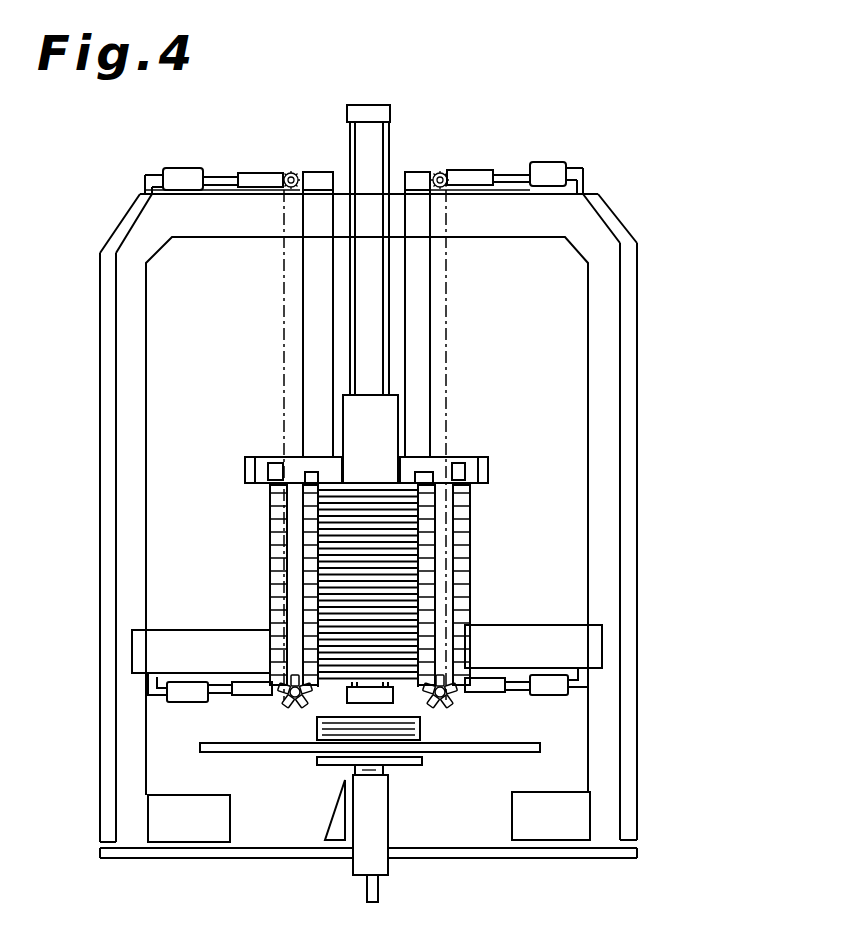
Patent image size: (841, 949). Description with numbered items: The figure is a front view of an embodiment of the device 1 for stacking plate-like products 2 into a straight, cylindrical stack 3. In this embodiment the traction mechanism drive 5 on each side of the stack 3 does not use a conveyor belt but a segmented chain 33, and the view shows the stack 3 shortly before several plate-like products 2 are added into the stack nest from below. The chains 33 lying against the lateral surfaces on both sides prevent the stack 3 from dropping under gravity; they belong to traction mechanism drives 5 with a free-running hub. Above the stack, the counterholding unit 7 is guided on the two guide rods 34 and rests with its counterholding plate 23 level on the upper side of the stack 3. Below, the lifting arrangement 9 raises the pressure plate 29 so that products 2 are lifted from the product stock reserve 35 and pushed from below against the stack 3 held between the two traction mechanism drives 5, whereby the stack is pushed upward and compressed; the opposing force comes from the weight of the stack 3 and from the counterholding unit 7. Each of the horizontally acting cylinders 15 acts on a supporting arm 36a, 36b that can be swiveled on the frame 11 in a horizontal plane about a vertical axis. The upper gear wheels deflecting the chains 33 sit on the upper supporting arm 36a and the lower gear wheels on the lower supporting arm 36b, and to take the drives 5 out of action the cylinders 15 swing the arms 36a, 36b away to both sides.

The device 1 is at (640, 168).
The plate-like products 2 is at (402, 728).
The stack 3 is at (383, 537).
The traction mechanism drive 5 is at (292, 390).
The counterholding unit 7 is at (408, 434).
The lifting arrangement 9 is at (398, 810).
The frame 11 is at (610, 395).
The horizontally acting cylinders 15 is at (182, 172).
The counterholding plate 23 is at (253, 467).
The pressure plate 29 is at (407, 760).
The segmented chain 33 is at (282, 317).
The guide rods 34 is at (350, 172).
The product stock reserve 35 is at (197, 744).
The upper supporting arm 36a is at (258, 172).
The lower supporting arm 36b is at (242, 687).